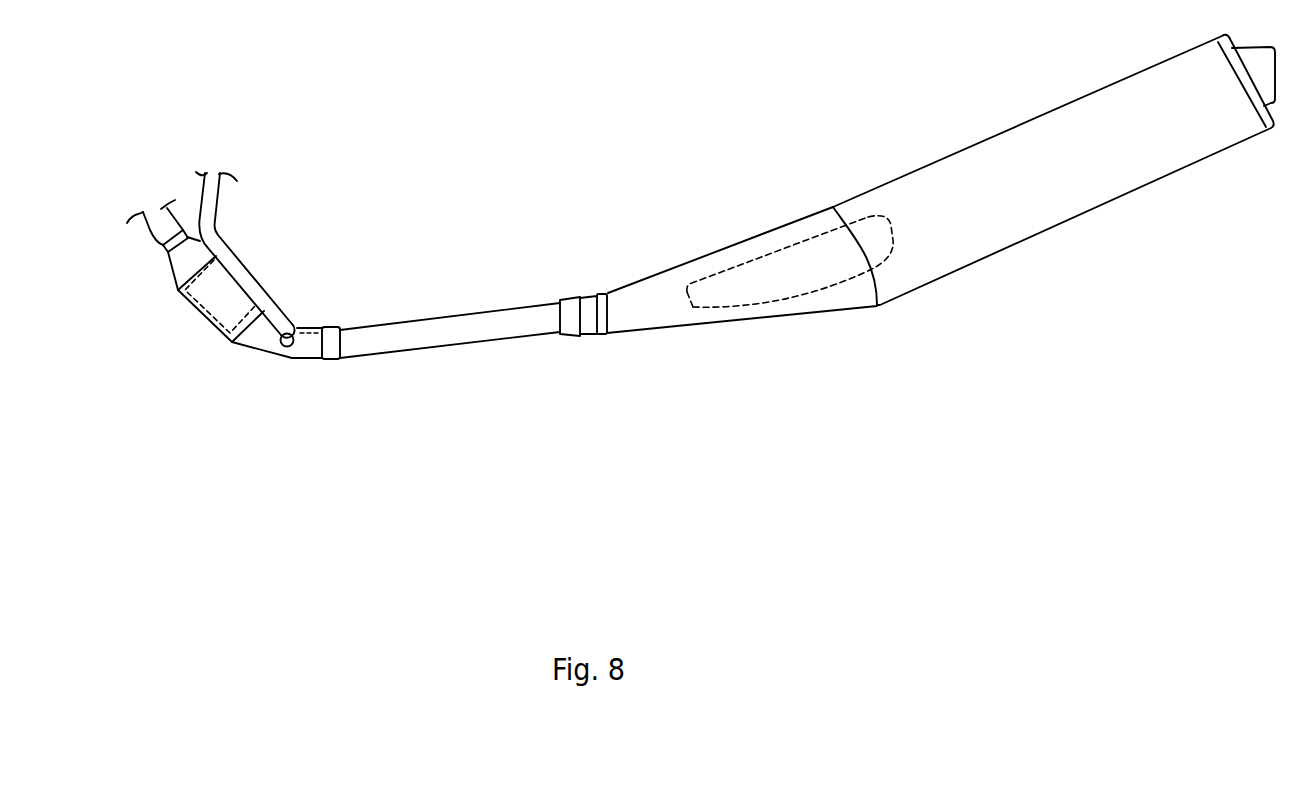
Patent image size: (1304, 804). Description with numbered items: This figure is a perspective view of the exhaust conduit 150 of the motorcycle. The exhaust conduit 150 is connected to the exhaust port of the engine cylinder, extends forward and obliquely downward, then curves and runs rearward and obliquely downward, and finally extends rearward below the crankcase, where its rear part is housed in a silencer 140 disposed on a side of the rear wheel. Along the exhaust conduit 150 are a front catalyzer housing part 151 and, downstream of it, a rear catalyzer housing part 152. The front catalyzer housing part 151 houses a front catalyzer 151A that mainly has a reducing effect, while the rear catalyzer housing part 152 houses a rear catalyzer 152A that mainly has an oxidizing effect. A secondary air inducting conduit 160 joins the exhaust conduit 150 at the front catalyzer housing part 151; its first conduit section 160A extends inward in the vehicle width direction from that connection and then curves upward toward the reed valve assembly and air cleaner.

The silencer 140 is at (868, 172).
The exhaust conduit 150 is at (433, 283).
The front catalyzer housing part 151 is at (203, 315).
The front catalyzer 151A is at (258, 327).
The rear catalyzer housing part 152 is at (780, 302).
The rear catalyzer 152A is at (850, 283).
The secondary air inducting conduit 160 is at (253, 273).
The first conduit section 160A is at (300, 342).